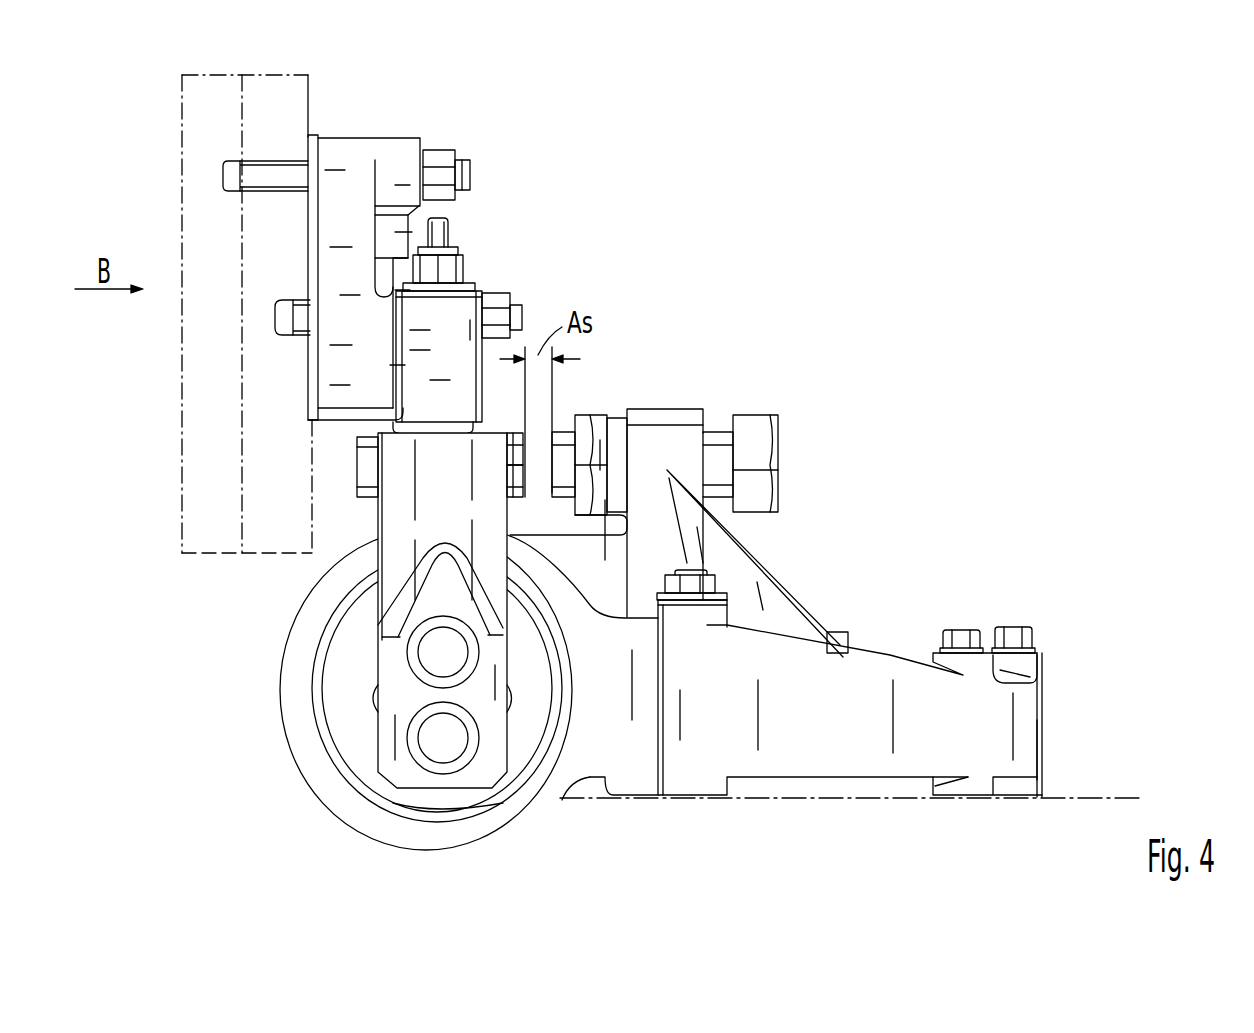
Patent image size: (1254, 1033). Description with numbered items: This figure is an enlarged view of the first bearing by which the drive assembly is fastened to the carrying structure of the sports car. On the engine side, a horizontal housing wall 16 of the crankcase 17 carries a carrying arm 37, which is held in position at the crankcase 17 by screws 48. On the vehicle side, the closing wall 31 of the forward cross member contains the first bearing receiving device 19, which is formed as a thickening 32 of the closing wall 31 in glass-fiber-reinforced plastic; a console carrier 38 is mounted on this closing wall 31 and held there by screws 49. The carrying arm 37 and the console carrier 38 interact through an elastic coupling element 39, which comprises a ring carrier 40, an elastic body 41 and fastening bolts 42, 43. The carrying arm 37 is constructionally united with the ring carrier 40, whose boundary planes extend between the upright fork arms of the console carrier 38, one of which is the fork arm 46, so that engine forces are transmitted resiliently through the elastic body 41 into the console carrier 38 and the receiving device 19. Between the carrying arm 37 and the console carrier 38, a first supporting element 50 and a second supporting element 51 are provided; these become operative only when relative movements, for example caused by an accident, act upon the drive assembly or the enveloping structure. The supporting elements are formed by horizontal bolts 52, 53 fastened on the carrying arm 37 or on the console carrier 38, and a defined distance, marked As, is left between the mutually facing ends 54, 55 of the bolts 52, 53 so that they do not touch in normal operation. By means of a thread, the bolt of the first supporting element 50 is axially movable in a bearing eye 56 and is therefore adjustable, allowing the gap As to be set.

The housing wall 16 is at (836, 800).
The crankcase 17 is at (1095, 791).
The first bearing receiving device 19 is at (317, 133).
The closing wall 31 is at (215, 527).
The thickening 32 is at (272, 527).
The carrying arm 37 is at (870, 665).
The console carrier 38 is at (477, 282).
The elastic coupling element 39 is at (337, 825).
The ring carrier 40 is at (472, 827).
The elastic body 41 is at (337, 694).
The fastening bolt 42 is at (437, 747).
The fastening bolt 43 is at (447, 658).
The fork arm 46 is at (492, 765).
The screws 48 is at (960, 635).
The screws 49 is at (438, 158).
The first supporting element 50 is at (565, 497).
The second supporting element 51 is at (515, 432).
The horizontal bolt 52 is at (515, 493).
The horizontal bolt 53 is at (560, 433).
The end of bolt 54 is at (513, 462).
The end of bolt 55 is at (553, 457).
The bearing eye 56 is at (688, 408).